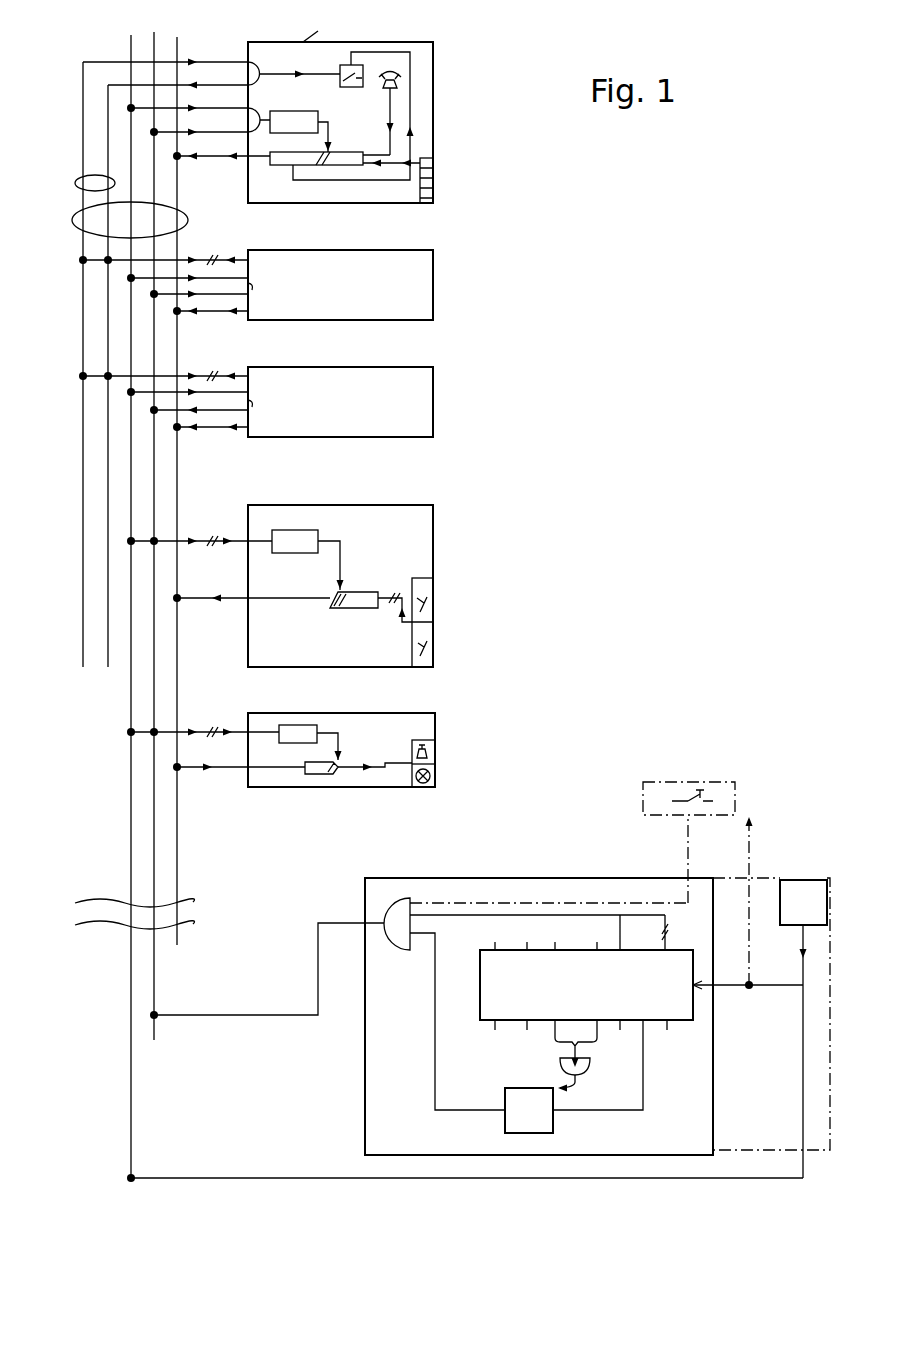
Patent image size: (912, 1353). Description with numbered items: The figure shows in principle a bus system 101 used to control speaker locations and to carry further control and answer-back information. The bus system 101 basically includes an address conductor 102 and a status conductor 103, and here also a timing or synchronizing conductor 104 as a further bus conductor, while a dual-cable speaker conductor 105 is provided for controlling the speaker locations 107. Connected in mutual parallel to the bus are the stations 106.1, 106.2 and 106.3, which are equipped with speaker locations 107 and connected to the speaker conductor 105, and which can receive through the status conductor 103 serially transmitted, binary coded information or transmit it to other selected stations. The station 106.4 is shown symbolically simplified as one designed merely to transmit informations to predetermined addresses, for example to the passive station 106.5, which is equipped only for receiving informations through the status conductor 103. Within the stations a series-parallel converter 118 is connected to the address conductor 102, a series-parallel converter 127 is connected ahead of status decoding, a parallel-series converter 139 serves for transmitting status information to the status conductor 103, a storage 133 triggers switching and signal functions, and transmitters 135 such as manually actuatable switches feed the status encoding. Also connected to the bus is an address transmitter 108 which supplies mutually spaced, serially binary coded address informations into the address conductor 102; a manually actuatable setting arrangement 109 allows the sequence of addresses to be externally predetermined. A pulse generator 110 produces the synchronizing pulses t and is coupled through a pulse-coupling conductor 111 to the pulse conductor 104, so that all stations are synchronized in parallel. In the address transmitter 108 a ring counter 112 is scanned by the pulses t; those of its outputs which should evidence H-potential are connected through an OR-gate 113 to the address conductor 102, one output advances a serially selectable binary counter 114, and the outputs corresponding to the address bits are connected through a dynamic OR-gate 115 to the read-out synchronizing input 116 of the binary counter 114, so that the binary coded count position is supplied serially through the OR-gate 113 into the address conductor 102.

The bus system 101 is at (188, 220).
The address conductor 102 is at (154, 40).
The status conductor 103 is at (177, 46).
The timing or synchronizing conductor 104 is at (131, 40).
The speaker conductor 105 is at (78, 183).
The station 106.1 is at (433, 52).
The station 106.2 is at (428, 265).
The station 106.3 is at (428, 378).
The station 106.4 is at (425, 526).
The passive station 106.5 is at (425, 727).
The speaker location 107 is at (400, 86).
The address transmitter 108 is at (528, 888).
The setting arrangement 109 is at (643, 793).
The pulse generator 110 is at (797, 880).
The pulse-coupling conductor 111 is at (281, 1178).
The ring counter 112 is at (480, 992).
The OR-gate 113 is at (391, 899).
The binary counter 114 is at (505, 1125).
The dynamic OR-gate 115 is at (590, 1066).
The read-out synchronizing input 116 is at (560, 1090).
The series-parallel converter 118 is at (307, 113).
The series-parallel converter 127 is at (288, 165).
The storage 133 is at (433, 162).
The transmitter 135 is at (433, 636).
The parallel-series converter 139 is at (346, 152).